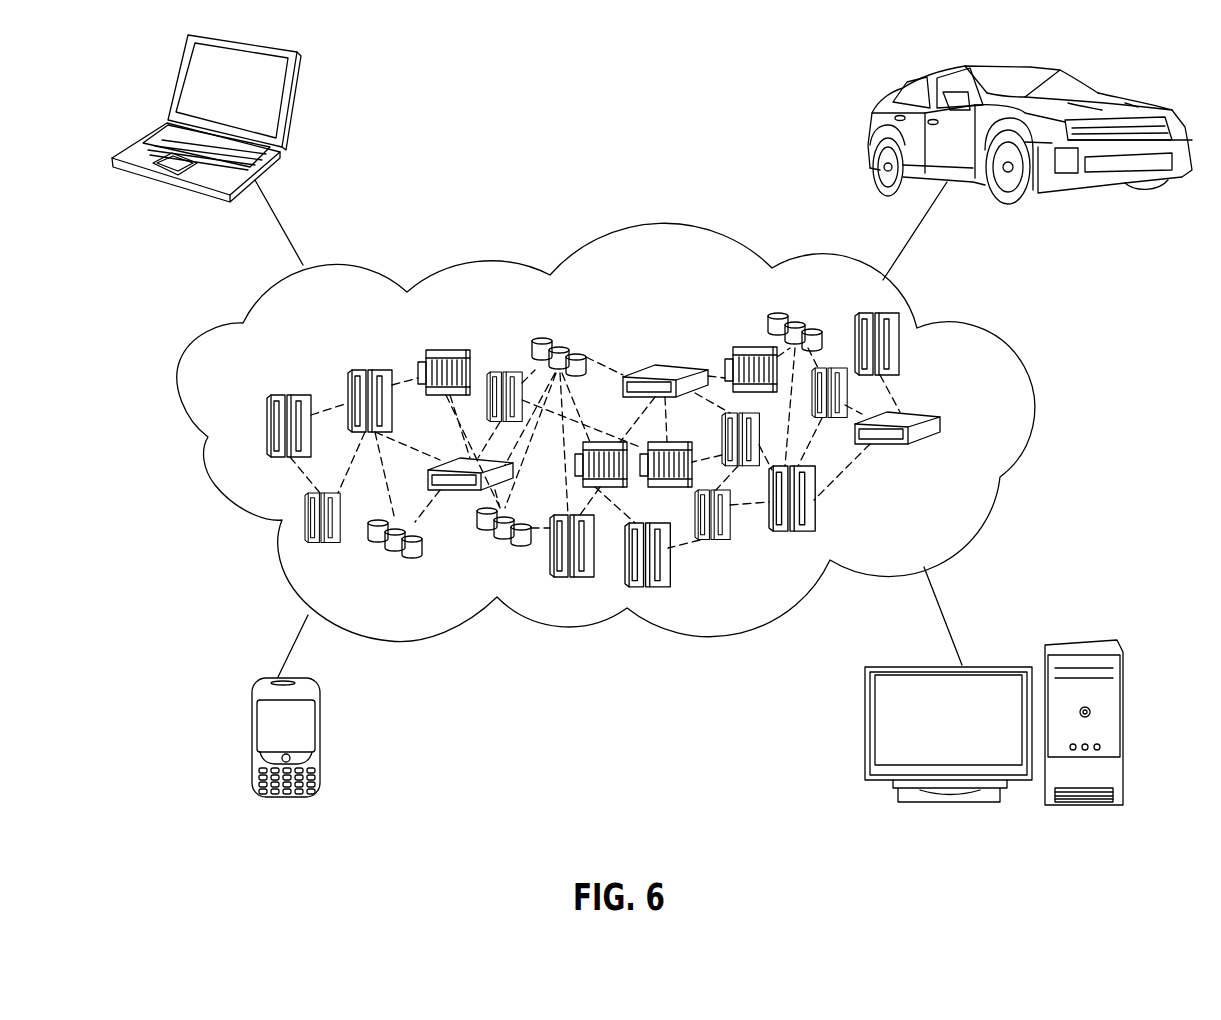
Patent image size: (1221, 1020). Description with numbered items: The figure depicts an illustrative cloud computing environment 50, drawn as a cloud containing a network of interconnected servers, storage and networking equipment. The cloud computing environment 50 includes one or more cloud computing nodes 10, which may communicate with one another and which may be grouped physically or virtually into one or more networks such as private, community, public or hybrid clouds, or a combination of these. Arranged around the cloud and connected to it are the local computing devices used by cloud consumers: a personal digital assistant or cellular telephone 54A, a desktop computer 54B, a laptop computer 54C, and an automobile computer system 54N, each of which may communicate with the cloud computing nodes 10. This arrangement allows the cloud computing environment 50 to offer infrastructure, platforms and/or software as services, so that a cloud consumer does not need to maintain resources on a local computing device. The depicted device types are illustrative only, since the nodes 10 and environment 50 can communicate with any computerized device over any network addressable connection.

The cloud computing node 10 is at (980, 427).
The cloud computing environment 50 is at (1003, 340).
The personal digital assistant (PDA) or cellular telephone 54A is at (252, 742).
The desktop computer 54B is at (1088, 640).
The laptop computer 54C is at (290, 105).
The automobile computer system 54N is at (877, 113).